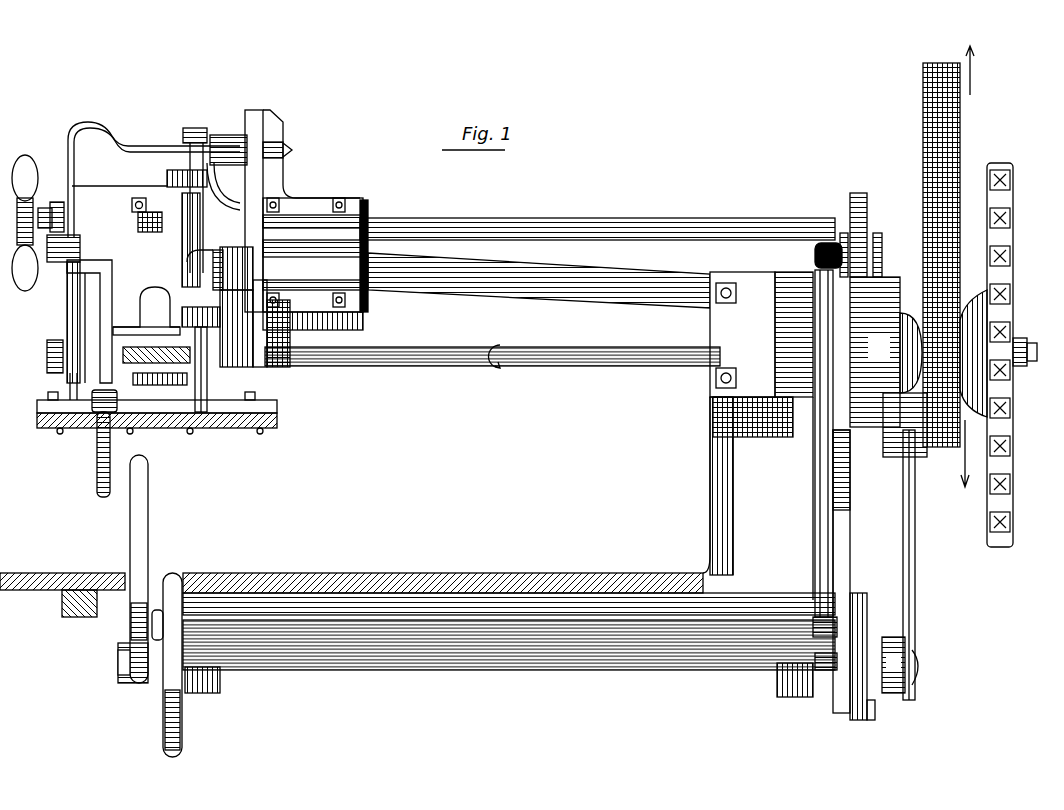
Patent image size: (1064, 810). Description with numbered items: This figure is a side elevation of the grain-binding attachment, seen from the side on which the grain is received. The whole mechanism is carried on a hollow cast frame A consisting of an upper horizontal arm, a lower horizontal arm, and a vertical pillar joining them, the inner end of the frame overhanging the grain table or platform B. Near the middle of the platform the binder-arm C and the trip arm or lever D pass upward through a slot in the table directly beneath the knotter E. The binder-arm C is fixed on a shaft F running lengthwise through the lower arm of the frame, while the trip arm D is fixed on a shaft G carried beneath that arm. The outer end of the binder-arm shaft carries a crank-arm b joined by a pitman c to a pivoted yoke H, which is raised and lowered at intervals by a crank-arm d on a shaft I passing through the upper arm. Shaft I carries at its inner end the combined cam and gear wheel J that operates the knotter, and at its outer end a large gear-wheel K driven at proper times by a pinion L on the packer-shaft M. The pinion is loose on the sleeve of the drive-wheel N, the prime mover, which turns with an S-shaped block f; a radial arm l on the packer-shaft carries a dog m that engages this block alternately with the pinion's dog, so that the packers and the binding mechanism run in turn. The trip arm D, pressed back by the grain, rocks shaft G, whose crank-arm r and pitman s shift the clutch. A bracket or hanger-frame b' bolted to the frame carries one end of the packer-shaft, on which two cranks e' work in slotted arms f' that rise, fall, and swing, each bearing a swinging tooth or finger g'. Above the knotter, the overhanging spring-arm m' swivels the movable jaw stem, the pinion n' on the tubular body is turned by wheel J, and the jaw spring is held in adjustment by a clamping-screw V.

The frame A is at (509, 448).
The grain table or platform B is at (440, 566).
The binder-arm C is at (182, 725).
The trip arm or lever D is at (148, 500).
The knotter E is at (200, 412).
The binder-arm shaft F is at (826, 626).
The trip-shaft G is at (828, 671).
The pivoted yoke H is at (867, 222).
The shaft I is at (822, 240).
The combined cam and gear wheel J is at (285, 220).
The gear-wheel K is at (954, 266).
The pinion L is at (927, 452).
The packer-shaft M is at (492, 343).
The drive-wheel N is at (1000, 355).
The clamping-screw V is at (38, 223).
The crank-arm b is at (877, 713).
The pitman c is at (861, 637).
The crank-arm d is at (865, 245).
The S-shaped block f is at (886, 352).
The radial arm l is at (824, 443).
The dog m is at (855, 571).
The crank-arm r is at (900, 665).
The pitman s is at (917, 565).
The needle plate a' is at (171, 407).
The bracket or hanger-frame b' is at (166, 317).
The cranks e' is at (151, 336).
The slotted arm f' is at (145, 316).
The swinging tooth or finger g' is at (155, 443).
The spring-arm m' is at (180, 180).
The pinion n' is at (139, 207).